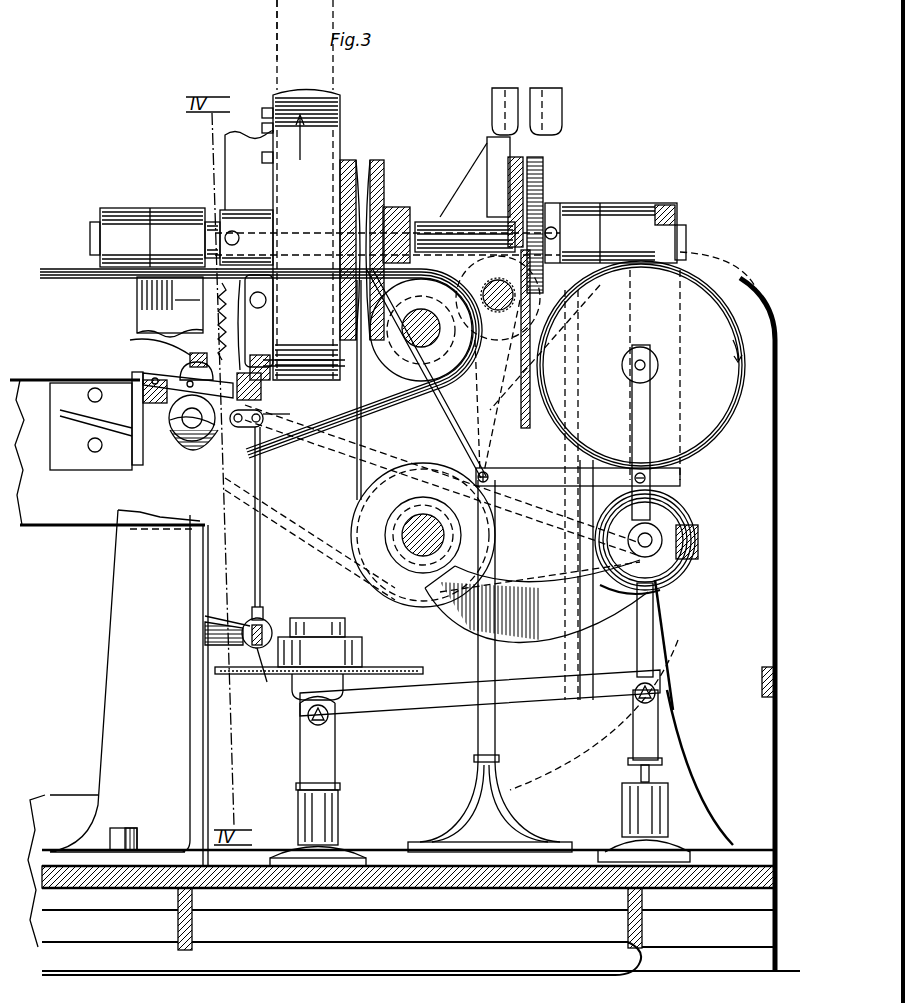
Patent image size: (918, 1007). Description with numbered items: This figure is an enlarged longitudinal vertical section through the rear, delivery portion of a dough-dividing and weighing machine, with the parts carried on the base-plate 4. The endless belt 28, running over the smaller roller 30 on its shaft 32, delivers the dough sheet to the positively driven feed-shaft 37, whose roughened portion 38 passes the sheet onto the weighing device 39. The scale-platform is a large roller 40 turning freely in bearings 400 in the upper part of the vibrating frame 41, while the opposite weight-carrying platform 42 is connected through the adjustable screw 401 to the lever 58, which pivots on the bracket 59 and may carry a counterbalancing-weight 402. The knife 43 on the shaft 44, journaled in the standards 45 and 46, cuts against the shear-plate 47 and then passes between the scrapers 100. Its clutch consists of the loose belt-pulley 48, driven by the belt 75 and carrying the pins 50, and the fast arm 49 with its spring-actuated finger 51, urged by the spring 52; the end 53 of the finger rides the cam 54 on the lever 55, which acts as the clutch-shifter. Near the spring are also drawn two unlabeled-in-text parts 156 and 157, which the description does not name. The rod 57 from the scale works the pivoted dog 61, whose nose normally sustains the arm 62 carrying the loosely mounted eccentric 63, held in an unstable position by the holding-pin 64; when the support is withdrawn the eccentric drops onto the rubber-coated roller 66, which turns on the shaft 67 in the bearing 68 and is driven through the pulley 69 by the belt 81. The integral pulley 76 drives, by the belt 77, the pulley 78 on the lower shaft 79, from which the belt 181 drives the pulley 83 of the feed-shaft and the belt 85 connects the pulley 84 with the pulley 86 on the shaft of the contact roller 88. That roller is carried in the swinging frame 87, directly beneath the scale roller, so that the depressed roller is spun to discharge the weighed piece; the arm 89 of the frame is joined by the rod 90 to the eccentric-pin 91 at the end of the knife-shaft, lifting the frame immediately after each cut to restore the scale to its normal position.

The base-plate 4 is at (437, 909).
The endless belt 28 is at (442, 480).
The roller 30 is at (421, 330).
The shaft 32 is at (421, 318).
The feed-shaft 37 is at (497, 287).
The roughened portion 38 is at (512, 305).
The weighing device 39 is at (490, 666).
The roller 40 is at (662, 265).
The vibrating frame 41 is at (632, 425).
The weight-carrying platform 42 is at (416, 667).
The knife 43 is at (532, 420).
The shaft 44 is at (90, 240).
The standard 45 is at (114, 728).
The standard 46 is at (665, 735).
The shear-plate 47 is at (545, 190).
The belt-pulley 48 is at (301, 235).
The arm 49 is at (259, 321).
The pins 50 is at (262, 160).
The spring-actuated finger 51 is at (213, 321).
The spring 52 is at (203, 300).
The end 53 is at (297, 358).
The cam 54 is at (261, 363).
The lever 55 is at (263, 395).
The rod 57 is at (262, 560).
The lever 58 is at (248, 648).
The bracket 59 is at (238, 428).
The dog 61 is at (262, 428).
The arm 62 is at (168, 374).
The eccentric 63 is at (172, 350).
The holding-pin 64 is at (195, 355).
The roller 66 is at (180, 428).
The shaft 67 is at (192, 430).
The bearing 68 is at (130, 385).
The pulley 69 is at (205, 452).
The belt 75 is at (277, 55).
The belt-pulley 76 is at (372, 190).
The belt 77 is at (428, 406).
The pulley 78 is at (423, 535).
The shaft 79 is at (415, 560).
The belt 81 is at (270, 508).
The pulley 83 is at (545, 347).
The pulley 84 is at (413, 534).
The belt 85 is at (540, 575).
The pulley 86 is at (685, 558).
The swinging frame 87 is at (536, 614).
The contact roller 88 is at (668, 578).
The arm 89 is at (706, 542).
The rod 90 is at (680, 479).
The eccentric-pin 91 is at (690, 237).
The scrapers 100 is at (562, 104).
The block 156 is at (160, 317).
The block 157 is at (137, 288).
The belt 181 is at (540, 404).
The bearings 400 is at (648, 366).
The screw 401 is at (282, 690).
The counterbalancing-weight 402 is at (270, 630).